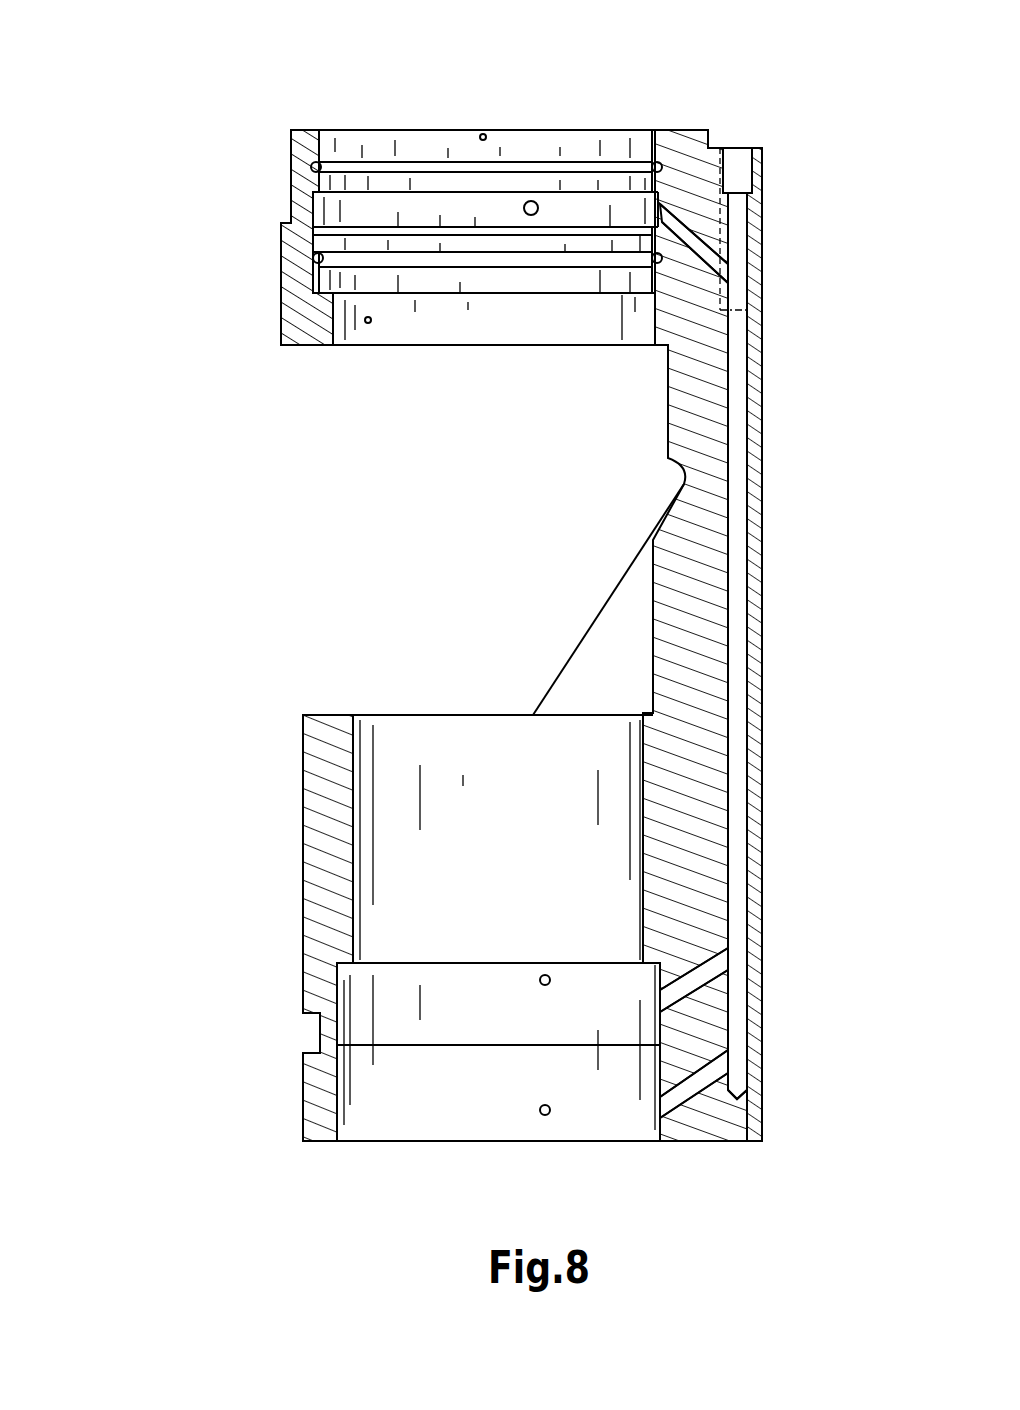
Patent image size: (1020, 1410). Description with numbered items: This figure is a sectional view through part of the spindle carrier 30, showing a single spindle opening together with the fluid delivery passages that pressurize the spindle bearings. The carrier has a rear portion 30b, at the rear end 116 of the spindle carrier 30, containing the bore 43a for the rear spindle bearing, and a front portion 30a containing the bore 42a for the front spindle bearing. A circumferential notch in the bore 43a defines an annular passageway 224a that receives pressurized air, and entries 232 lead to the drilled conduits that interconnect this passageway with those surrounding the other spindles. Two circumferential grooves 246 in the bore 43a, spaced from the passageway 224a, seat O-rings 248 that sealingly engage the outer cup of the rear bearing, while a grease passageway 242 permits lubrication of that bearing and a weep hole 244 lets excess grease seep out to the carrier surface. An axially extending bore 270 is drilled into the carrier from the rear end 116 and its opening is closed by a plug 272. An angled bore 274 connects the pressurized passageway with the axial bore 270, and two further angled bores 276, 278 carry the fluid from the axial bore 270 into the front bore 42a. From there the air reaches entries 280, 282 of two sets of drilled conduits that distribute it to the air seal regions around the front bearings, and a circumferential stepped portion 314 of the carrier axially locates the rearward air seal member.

The spindle carrier 30 is at (292, 623).
The front portion of the spindle carrier 30a is at (313, 790).
The rear portion of the spindle carrier 30b is at (298, 320).
The bore 42a is at (350, 898).
The bore 43a is at (322, 241).
The rear end of the spindle carrier 116 is at (678, 128).
The annular passageway 224a is at (437, 205).
The entries to the drilled conduits 232 is at (533, 201).
The grease passageway 242 is at (366, 326).
The weep hole 244 is at (480, 136).
The circumferential groove 246 is at (316, 167).
The O-ring 248 is at (318, 167).
The axial bore 270 is at (746, 424).
The plug 272 is at (740, 147).
The angled bore 274 is at (703, 255).
The angled bore 276 is at (700, 968).
The angled bore 278 is at (692, 1080).
The entry to drilled conduits 280 is at (543, 986).
The entry to drilled conduits 282 is at (541, 1116).
The circumferential stepped portion 314 is at (607, 1120).